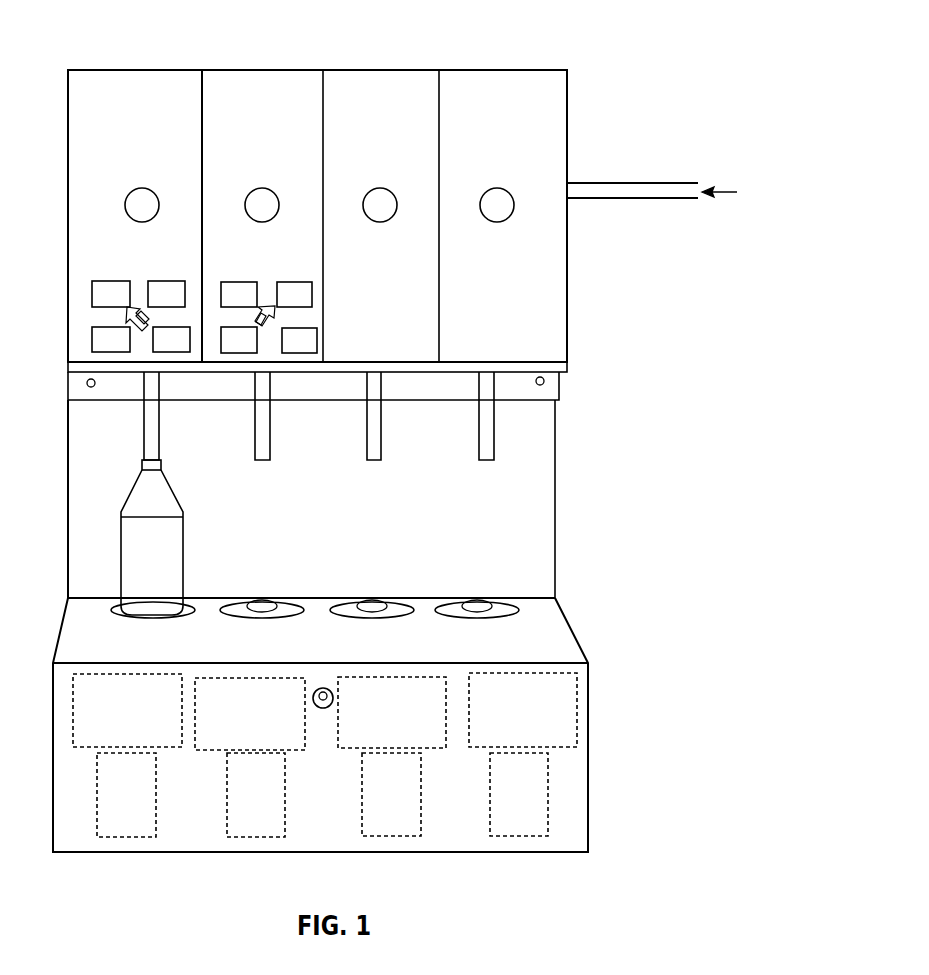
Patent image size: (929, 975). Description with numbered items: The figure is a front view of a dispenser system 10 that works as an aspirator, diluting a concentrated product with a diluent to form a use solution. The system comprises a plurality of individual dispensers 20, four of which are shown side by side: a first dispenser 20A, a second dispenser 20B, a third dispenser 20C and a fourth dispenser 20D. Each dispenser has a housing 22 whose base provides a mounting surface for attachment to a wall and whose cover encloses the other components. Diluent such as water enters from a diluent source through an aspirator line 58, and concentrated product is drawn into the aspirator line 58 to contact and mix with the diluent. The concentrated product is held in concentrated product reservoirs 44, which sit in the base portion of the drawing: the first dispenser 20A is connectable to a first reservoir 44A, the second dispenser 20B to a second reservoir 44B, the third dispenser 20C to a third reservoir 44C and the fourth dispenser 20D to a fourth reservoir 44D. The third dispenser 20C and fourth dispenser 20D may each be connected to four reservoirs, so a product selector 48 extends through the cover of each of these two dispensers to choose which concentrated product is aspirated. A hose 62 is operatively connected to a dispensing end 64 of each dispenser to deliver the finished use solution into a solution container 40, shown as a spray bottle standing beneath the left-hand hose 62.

The dispenser system 10 is at (584, 57).
The dispensers 20 is at (572, 107).
The first dispenser 20A is at (470, 70).
The second dispenser 20B is at (362, 70).
The third dispenser 20C is at (250, 70).
The fourth dispenser 20D is at (103, 70).
The housing 22 is at (568, 283).
The solution container 40 is at (184, 536).
The concentrated product reservoirs 44 is at (594, 716).
The first reservoir 44A is at (548, 791).
The second reservoir 44B is at (421, 798).
The third reservoir 44C is at (285, 806).
The fourth reservoir 44D is at (156, 806).
The product selector 48 is at (150, 316).
The aspirator line 58 is at (665, 183).
The hose 62 is at (160, 427).
The dispensing end 64 is at (168, 375).